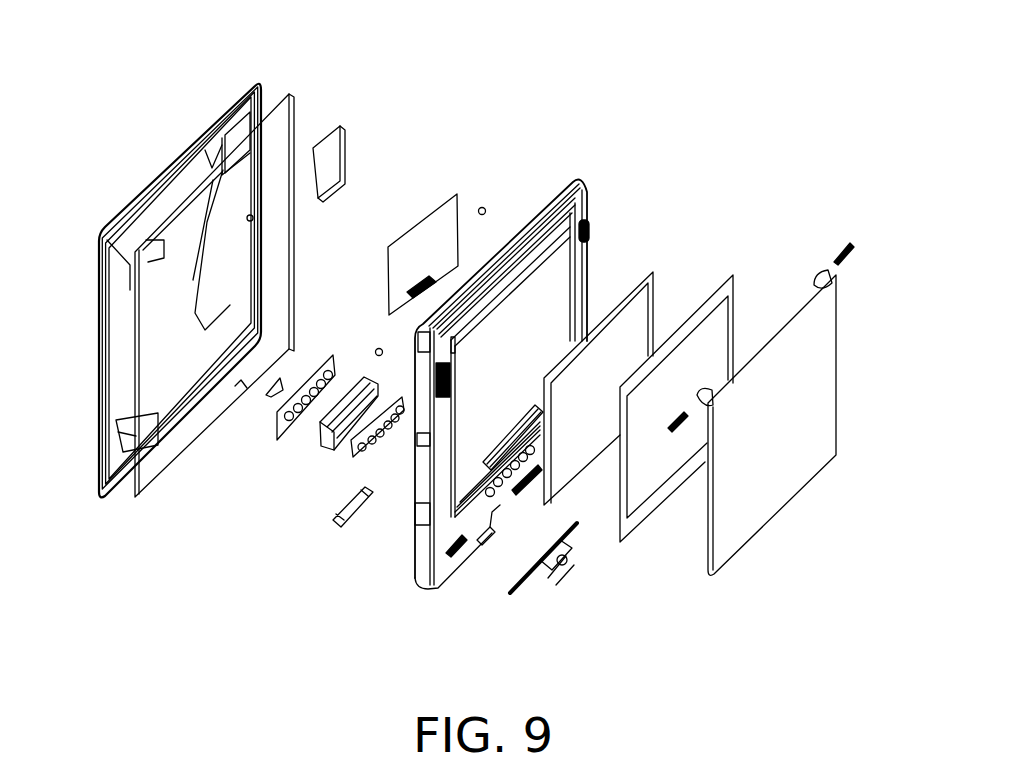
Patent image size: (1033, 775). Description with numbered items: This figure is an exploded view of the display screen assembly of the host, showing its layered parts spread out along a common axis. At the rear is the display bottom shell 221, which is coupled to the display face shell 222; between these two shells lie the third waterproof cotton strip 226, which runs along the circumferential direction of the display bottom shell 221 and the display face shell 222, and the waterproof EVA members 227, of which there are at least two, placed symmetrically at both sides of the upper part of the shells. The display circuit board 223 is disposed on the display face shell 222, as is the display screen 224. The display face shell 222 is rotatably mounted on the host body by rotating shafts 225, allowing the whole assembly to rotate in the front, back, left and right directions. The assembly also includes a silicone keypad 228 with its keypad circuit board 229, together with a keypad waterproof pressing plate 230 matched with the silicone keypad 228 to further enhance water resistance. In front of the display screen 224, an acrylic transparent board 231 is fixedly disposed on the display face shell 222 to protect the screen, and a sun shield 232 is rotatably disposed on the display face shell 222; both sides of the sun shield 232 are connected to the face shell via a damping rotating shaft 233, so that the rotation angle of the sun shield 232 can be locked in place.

The display bottom shell 221 is at (157, 217).
The display face shell 222 is at (574, 183).
The display circuit board 223 is at (433, 230).
The display screen 224 is at (655, 272).
The rotating shafts 225 is at (562, 577).
The third waterproof cotton strip 226 is at (217, 168).
The waterproof EVA members 227 is at (327, 133).
The silicone keypad 228 is at (350, 462).
The keypad circuit board 229 is at (275, 443).
The keypad waterproof pressing plate 230 is at (367, 375).
The acrylic transparent board 231 is at (734, 277).
The sun shield 232 is at (793, 463).
The damping rotating shaft 233 is at (848, 242).